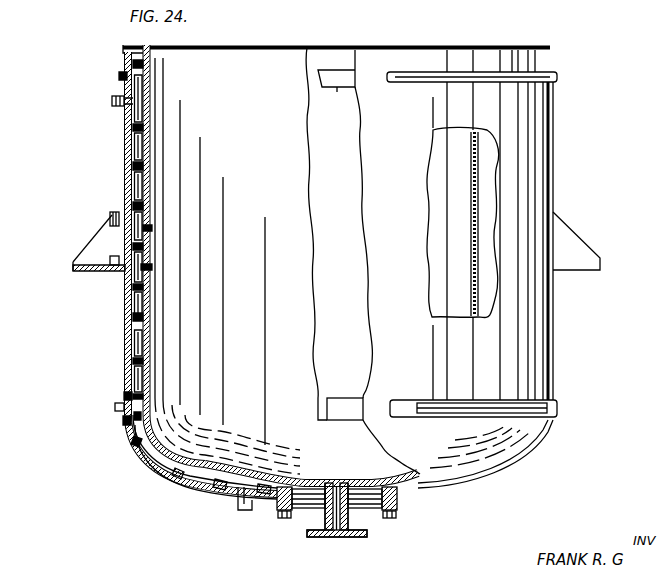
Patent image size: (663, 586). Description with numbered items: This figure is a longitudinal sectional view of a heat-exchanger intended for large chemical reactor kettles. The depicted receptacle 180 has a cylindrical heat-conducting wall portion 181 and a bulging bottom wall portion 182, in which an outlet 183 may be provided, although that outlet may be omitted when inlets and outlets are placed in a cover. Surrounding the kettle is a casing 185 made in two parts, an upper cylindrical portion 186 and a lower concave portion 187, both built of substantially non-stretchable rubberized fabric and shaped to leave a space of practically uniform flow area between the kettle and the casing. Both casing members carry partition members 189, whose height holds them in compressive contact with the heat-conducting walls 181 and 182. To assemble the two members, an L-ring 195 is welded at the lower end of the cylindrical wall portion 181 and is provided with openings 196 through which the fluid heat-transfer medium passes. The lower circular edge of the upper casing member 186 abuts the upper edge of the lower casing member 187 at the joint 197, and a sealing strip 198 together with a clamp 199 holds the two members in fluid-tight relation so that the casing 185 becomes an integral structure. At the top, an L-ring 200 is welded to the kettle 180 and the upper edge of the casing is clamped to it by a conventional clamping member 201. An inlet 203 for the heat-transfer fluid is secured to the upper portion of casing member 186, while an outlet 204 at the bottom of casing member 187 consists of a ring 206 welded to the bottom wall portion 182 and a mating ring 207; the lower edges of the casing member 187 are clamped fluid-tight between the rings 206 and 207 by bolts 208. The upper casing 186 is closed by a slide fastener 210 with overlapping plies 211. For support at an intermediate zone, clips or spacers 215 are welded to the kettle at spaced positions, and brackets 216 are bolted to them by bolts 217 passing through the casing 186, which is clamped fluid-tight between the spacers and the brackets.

The receptacle 180 is at (296, 46).
The cylindrical heat-conducting wall portion 181 is at (143, 82).
The bulging bottom wall portion 182 is at (203, 463).
The outlet 183 is at (353, 538).
The casing 185 is at (143, 461).
The upper cylindrical casing portion 186 is at (127, 187).
The lower concave casing portion 187 is at (175, 472).
The partition members 189 is at (125, 313).
The L-ring 195 is at (124, 418).
The openings 196 is at (136, 440).
The abutting joint 197 is at (134, 418).
The sealing strip 198 is at (123, 396).
The clamp 199 is at (115, 408).
The L-ring 200 is at (133, 66).
The clamping member 201 is at (118, 75).
The inlet 203 is at (113, 98).
The outlet 204 is at (243, 512).
The ring 206 is at (295, 482).
The mating ring 207 is at (284, 506).
The bolts 208 is at (287, 519).
The slide fastener 210 is at (470, 232).
The overlapping plies 211 is at (455, 110).
The clips or spacers 215 is at (143, 267).
The brackets 216 is at (77, 267).
The bolts 217 is at (110, 215).